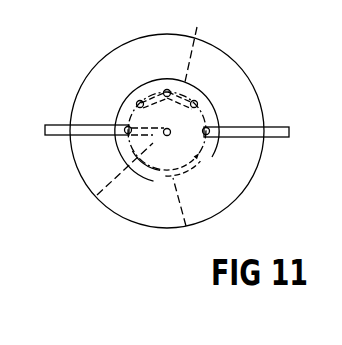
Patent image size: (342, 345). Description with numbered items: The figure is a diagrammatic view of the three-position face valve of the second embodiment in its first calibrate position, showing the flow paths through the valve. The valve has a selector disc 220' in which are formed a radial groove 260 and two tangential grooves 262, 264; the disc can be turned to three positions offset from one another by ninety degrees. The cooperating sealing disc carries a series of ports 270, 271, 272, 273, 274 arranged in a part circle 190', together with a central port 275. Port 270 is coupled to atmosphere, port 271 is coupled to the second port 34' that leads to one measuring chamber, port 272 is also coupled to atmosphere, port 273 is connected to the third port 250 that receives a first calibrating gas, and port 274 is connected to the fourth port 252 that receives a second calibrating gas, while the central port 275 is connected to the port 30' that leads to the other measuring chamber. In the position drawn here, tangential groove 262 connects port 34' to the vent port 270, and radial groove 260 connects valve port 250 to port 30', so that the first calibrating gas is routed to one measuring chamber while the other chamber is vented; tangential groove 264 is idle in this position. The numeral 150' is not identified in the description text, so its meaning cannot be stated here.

The disc 150' is at (191, 118).
The third port 250 is at (57, 125).
The fourth port 252 is at (281, 126).
The selector disc 220' is at (140, 94).
The part circle 190' is at (94, 166).
The port 30' is at (185, 155).
The second port 34' is at (167, 76).
The radial groove 260 is at (97, 195).
The tangential groove 262 is at (215, 44).
The tangential groove 264 is at (186, 226).
The port 270 is at (196, 101).
The port 271 is at (166, 90).
The port 272 is at (137, 101).
The port 273 is at (125, 127).
The port 274 is at (208, 135).
The central port 275 is at (165, 137).